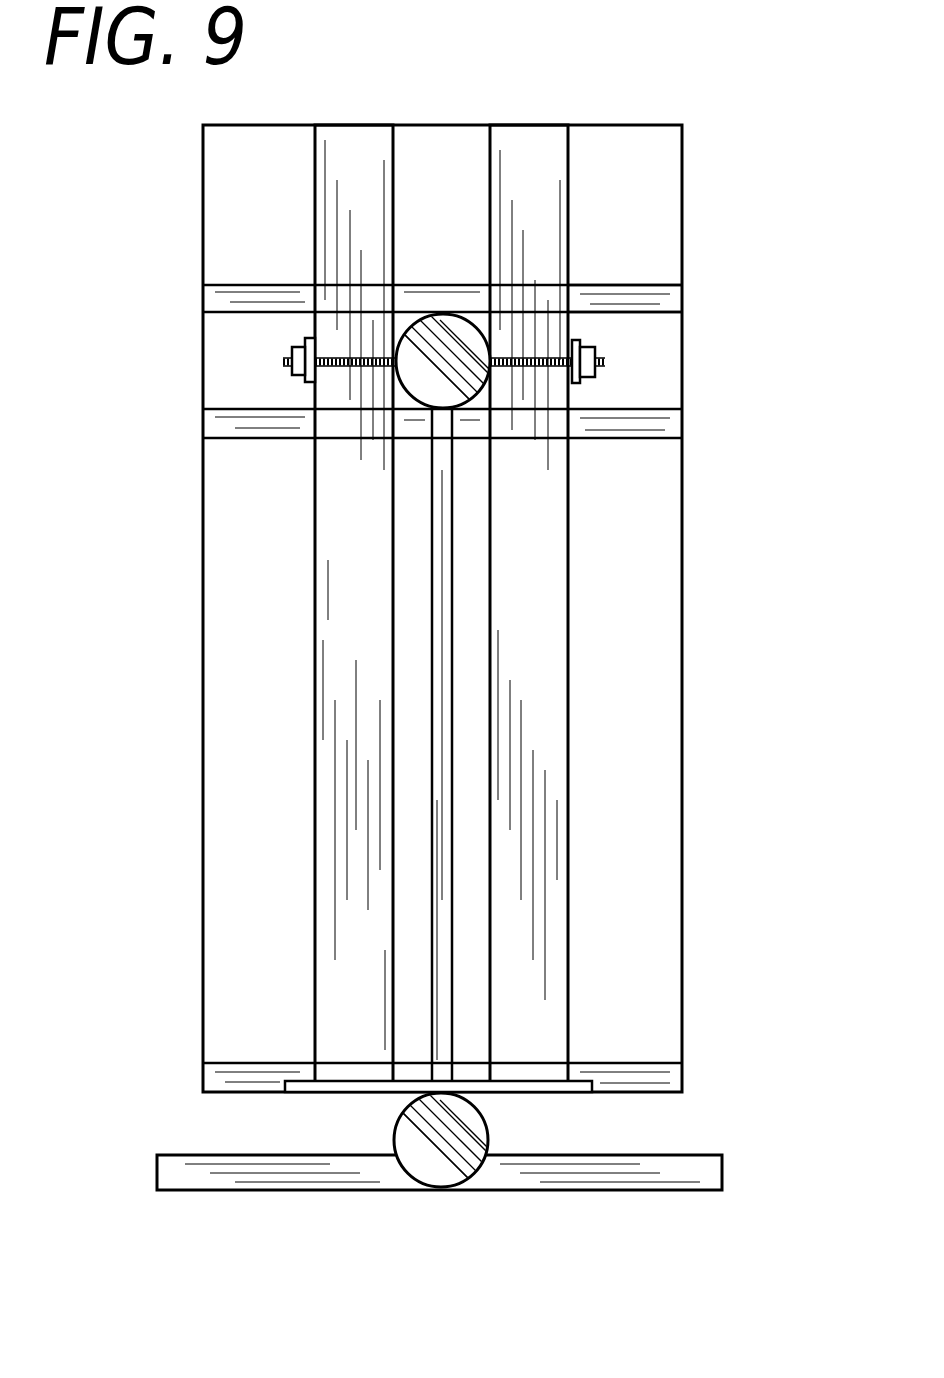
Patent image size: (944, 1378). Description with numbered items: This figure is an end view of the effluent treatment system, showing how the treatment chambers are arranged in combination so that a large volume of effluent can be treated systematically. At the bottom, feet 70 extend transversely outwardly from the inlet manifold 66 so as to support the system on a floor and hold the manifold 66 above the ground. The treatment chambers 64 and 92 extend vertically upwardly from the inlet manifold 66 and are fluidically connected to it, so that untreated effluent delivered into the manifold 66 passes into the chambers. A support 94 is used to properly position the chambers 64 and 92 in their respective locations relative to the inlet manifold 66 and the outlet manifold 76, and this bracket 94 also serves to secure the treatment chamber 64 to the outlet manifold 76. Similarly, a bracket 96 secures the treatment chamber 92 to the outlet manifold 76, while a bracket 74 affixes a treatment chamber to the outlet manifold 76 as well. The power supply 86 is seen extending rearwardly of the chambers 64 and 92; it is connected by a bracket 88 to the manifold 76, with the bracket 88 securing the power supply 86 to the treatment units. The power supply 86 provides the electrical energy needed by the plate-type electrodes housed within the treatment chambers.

The treatment chamber 64 is at (550, 815).
The manifold 66 is at (416, 1163).
The feet 70 is at (640, 1193).
The bracket 74 is at (520, 368).
The outlet manifold 76 is at (472, 335).
The power supply 86 is at (220, 728).
The bracket 88 is at (657, 298).
The treatment chamber 92 is at (328, 940).
The support 94 is at (305, 1093).
The bracket 96 is at (315, 352).